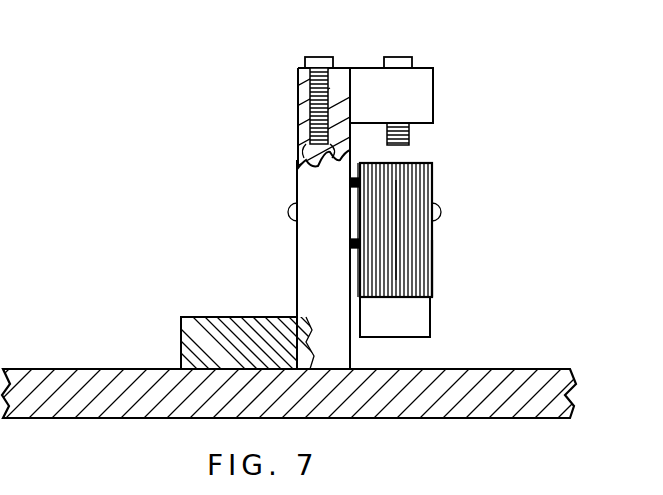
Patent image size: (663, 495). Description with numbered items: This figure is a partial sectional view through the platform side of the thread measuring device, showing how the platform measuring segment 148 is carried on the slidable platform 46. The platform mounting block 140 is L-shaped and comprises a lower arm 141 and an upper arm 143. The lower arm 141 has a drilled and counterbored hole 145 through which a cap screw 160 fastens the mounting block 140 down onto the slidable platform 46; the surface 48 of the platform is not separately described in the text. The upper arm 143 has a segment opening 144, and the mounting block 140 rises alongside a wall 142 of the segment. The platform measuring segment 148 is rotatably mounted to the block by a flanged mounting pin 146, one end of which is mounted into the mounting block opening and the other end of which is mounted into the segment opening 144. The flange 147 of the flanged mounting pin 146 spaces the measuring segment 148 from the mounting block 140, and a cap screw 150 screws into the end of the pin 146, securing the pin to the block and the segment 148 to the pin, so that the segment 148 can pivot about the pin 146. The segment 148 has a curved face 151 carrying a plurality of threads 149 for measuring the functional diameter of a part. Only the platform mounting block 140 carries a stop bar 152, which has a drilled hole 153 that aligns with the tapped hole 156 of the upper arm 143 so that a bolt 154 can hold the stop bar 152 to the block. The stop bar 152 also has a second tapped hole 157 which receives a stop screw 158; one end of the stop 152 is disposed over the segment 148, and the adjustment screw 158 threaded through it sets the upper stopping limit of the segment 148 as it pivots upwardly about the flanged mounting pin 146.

The slidable platform 46 is at (76, 362).
The upper surface of base plate 48 is at (125, 367).
The platform mounting block 140 is at (290, 284).
The lower arm 141 is at (182, 326).
The post side wall 142 is at (296, 200).
The upper arm 143 is at (296, 170).
The segment opening 144 is at (433, 201).
The drilled and counterbored hole 145 is at (201, 316).
The flanged mounting pin 146 is at (352, 243).
The flange 147 is at (352, 182).
The platform measuring segment 148 is at (442, 282).
The threads 149 is at (410, 248).
The cap screw 150 is at (289, 218).
The curved face 151 is at (412, 299).
The stop bar 152 is at (369, 80).
The drilled hole 153 is at (297, 74).
The bolt 154 is at (314, 56).
The tapped hole 156 is at (304, 130).
The second tapped hole 157 is at (414, 67).
The stop screw 158 is at (398, 56).
The cap screw 160 is at (228, 316).